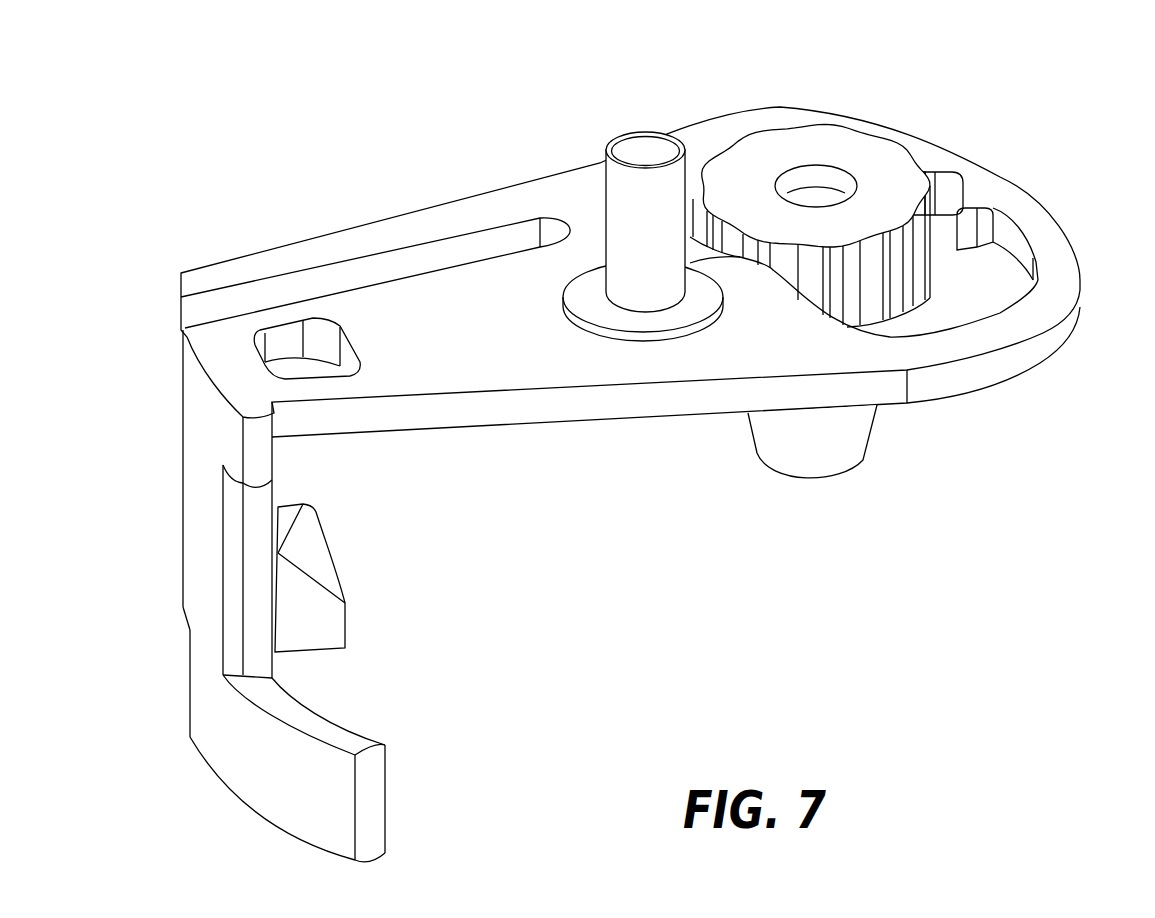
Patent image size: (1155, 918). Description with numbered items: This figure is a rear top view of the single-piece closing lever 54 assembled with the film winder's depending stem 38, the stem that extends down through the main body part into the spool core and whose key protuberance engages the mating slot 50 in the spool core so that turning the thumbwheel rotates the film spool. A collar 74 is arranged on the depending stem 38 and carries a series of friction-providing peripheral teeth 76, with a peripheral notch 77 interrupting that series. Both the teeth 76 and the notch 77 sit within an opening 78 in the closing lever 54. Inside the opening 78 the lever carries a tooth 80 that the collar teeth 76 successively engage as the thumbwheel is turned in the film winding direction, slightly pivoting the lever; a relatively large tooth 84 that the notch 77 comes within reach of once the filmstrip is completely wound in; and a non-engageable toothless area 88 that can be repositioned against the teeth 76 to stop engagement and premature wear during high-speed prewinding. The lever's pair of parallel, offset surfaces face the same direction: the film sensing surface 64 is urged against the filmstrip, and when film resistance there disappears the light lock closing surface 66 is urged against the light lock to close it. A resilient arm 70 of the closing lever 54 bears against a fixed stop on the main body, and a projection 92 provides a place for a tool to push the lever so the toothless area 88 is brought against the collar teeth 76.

The depending stem 38 is at (837, 440).
The mating slot 50 is at (645, 140).
The closing lever 54 is at (475, 432).
The film sensing surface 64 is at (375, 805).
The light lock closing surface 66 is at (318, 630).
The resilient arm 70 is at (363, 227).
The collar 74 is at (863, 244).
The peripheral teeth 76 is at (890, 290).
The peripheral notch 77 is at (928, 173).
The opening 78 is at (1005, 302).
The tooth 80 is at (947, 168).
The large tooth 84 is at (977, 192).
The toothless area 88 is at (715, 142).
The projection 92 is at (260, 455).